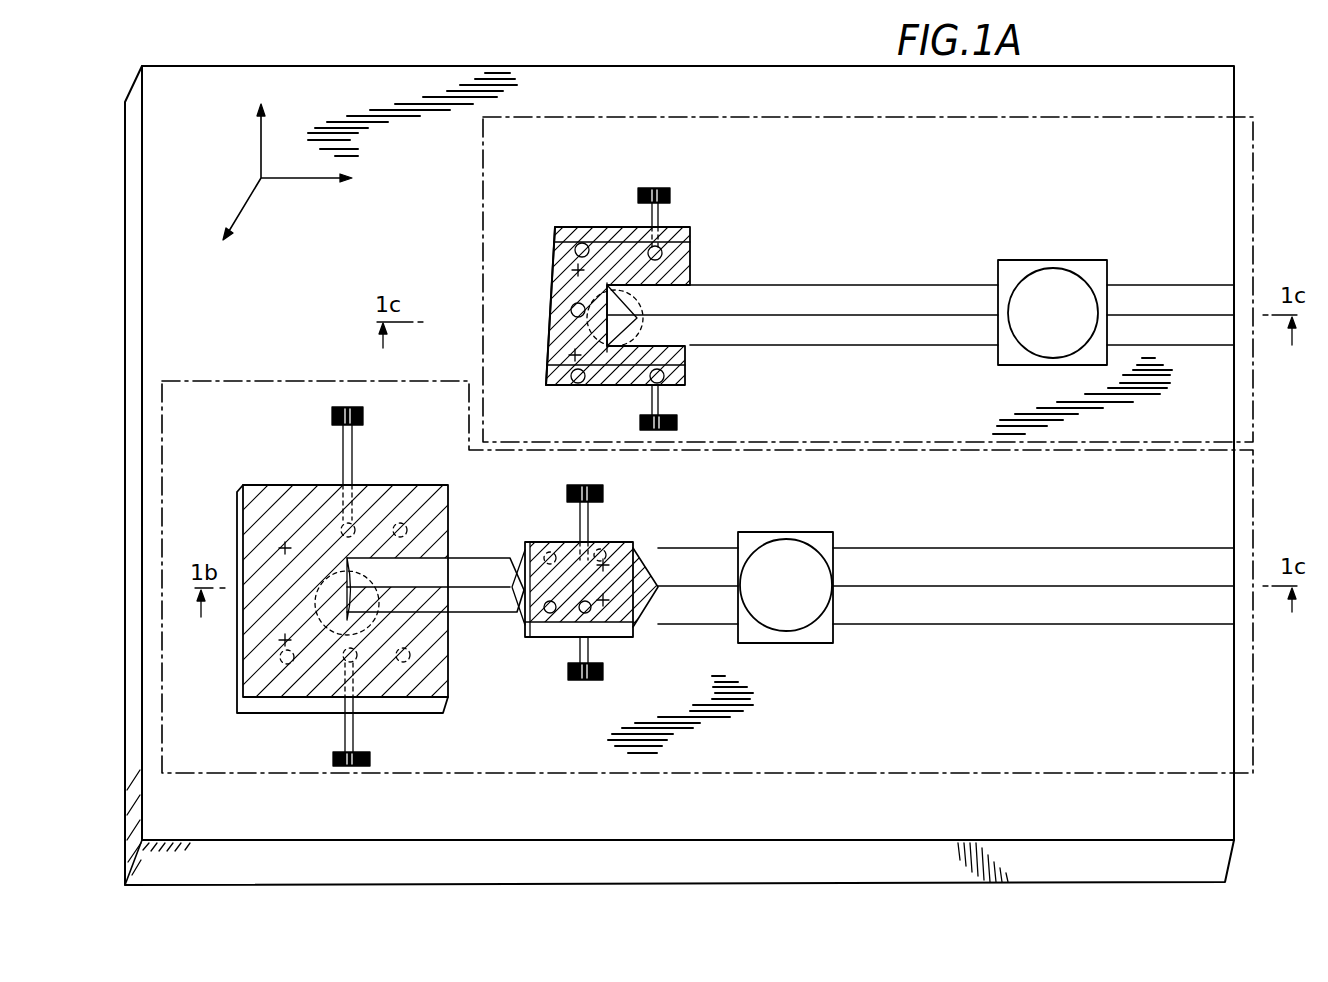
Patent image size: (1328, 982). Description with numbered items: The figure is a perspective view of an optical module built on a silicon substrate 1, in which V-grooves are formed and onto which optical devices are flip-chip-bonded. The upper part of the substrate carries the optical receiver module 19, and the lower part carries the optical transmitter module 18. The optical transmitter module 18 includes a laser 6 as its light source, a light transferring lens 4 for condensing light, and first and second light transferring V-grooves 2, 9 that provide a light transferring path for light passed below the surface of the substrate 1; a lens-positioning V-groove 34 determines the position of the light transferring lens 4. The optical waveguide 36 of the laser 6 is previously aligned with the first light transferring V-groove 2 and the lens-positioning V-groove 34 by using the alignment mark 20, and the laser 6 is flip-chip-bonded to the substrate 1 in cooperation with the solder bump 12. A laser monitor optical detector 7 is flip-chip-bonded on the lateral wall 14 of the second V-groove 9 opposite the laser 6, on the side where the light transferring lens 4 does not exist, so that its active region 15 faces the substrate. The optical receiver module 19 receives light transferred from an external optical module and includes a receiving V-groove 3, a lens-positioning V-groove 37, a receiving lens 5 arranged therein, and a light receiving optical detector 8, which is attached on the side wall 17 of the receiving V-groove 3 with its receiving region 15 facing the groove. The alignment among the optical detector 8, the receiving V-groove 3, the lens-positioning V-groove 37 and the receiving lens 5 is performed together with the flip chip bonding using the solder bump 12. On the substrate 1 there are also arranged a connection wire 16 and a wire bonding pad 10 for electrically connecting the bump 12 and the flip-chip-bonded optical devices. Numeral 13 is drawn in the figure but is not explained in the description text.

The silicon substrate 1 is at (628, 67).
The first light transferring V-groove 2 is at (1075, 598).
The receiving V-groove 3 is at (866, 284).
The light transferring lens 4 is at (797, 563).
The receiving lens 5 is at (1055, 292).
The laser 6 is at (557, 630).
The laser monitor optical detector 7 is at (265, 575).
The light receiving optical detector 8 is at (548, 272).
The second light transferring V-groove 9 is at (463, 557).
The wire bonding pad 10 is at (656, 186).
The solder bump 12 is at (563, 225).
The recess 13 is at (550, 322).
The lateral wall 14 is at (347, 590).
The active region 15 is at (548, 242).
The connection wire 16 is at (340, 453).
The side wall 17 is at (603, 280).
The optical transmitter module 18 is at (985, 774).
The optical receiver module 19 is at (1103, 116).
The alignment mark 20 is at (603, 550).
The lens-positioning V-groove 34 is at (797, 643).
The optical waveguide 36 is at (533, 540).
The lens-positioning V-groove 37 is at (1000, 268).